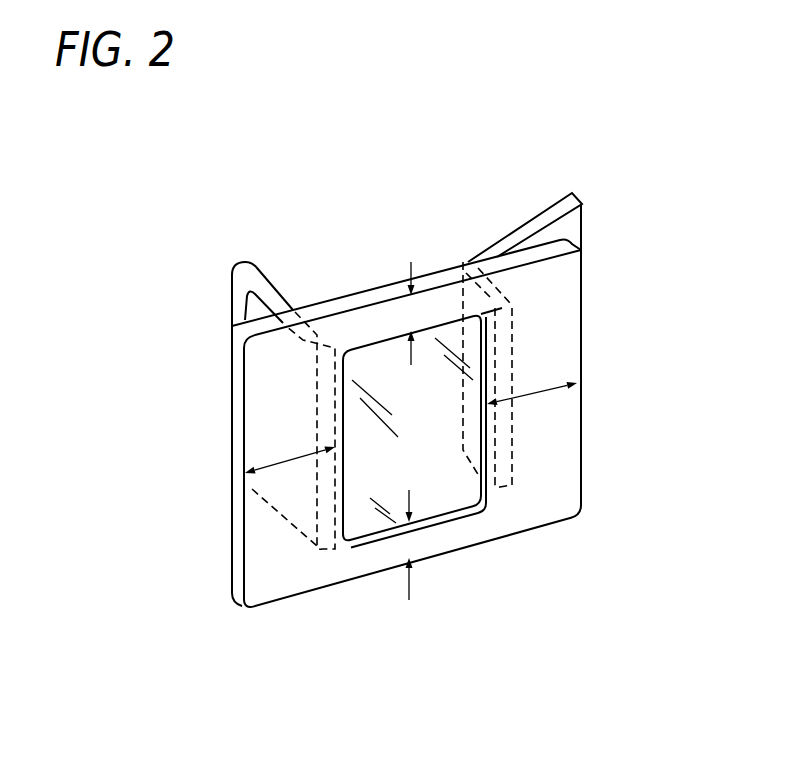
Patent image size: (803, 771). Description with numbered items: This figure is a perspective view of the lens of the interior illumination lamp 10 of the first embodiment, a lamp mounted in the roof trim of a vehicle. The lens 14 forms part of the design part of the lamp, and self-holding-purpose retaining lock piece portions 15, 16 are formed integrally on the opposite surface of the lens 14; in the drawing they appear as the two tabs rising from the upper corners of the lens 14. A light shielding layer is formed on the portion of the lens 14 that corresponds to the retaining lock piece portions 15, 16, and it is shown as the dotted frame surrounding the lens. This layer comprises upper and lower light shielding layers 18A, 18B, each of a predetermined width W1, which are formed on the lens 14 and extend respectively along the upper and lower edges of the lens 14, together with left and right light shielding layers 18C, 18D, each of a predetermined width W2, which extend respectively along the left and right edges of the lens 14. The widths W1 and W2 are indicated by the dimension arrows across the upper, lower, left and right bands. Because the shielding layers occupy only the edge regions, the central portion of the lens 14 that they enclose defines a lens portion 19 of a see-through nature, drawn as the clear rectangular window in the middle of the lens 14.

The interior illumination lamp 10 is at (305, 176).
The lens 14 is at (358, 500).
The retaining lock piece portion 15 is at (549, 203).
The retaining lock piece portion 16 is at (242, 263).
The upper light shielding layer 18A is at (365, 323).
The lower light shielding layer 18B is at (372, 560).
The left light shielding layer 18C is at (268, 405).
The right light shielding layer 18D is at (584, 437).
The lens portion 19 is at (440, 473).
The width of upper and lower light shielding layers W1 is at (413, 312).
The width of left and right light shielding layers W2 is at (283, 463).